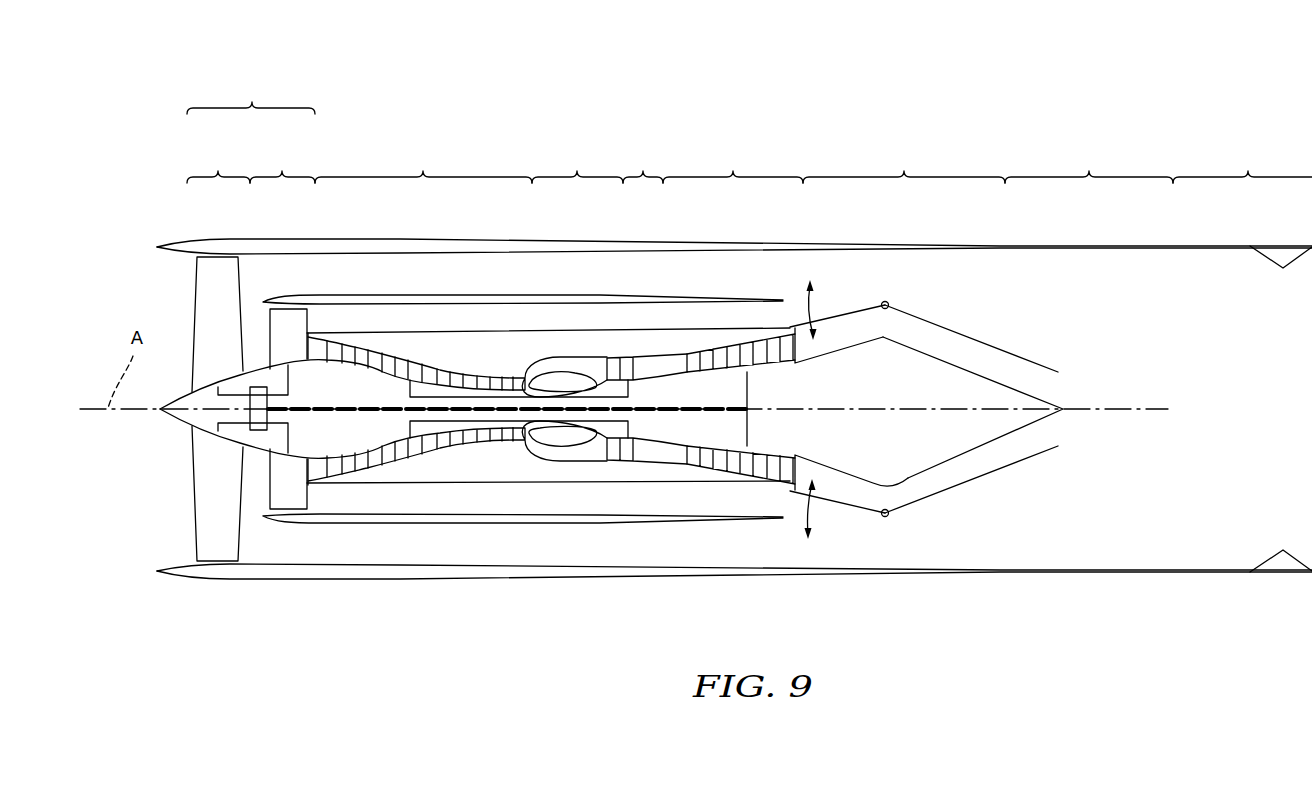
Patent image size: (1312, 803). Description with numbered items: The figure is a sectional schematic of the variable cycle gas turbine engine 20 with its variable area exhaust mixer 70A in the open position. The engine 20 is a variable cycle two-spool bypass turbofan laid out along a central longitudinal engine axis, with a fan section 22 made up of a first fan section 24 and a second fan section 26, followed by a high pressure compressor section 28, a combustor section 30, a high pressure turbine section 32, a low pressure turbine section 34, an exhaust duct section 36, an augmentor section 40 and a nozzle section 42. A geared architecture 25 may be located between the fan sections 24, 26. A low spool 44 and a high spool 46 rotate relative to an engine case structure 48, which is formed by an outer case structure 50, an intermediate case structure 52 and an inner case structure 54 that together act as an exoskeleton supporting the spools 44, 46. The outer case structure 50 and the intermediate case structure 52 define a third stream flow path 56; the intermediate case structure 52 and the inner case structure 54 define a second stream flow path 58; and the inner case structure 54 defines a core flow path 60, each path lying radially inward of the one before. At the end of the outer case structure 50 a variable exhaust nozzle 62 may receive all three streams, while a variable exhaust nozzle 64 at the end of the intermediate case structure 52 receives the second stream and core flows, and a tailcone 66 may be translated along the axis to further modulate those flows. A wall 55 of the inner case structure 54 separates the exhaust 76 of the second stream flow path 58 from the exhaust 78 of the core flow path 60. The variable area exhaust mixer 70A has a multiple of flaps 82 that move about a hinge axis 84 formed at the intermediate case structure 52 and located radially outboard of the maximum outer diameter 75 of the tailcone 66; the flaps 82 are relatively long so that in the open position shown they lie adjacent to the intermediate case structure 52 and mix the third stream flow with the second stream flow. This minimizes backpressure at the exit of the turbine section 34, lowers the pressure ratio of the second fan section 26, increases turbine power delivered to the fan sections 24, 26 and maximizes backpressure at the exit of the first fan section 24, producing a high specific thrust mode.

The gas turbine engine 20 is at (804, 110).
The fan section 22 is at (251, 91).
The first fan section 24 is at (218, 350).
The geared architecture 25 is at (260, 402).
The second fan section 26 is at (282, 324).
The high pressure compressor section 28 is at (420, 312).
The combustor section 30 is at (577, 161).
The high pressure turbine section 32 is at (647, 302).
The low pressure turbine section 34 is at (733, 312).
The exhaust duct section 36 is at (904, 161).
The augmentor section 40 is at (1089, 161).
The nozzle section 42 is at (1242, 161).
The low spool 44 is at (682, 408).
The high spool 46 is at (438, 423).
The engine case structure 48 is at (384, 591).
The outer case structure 50 is at (441, 580).
The intermediate case structure 52 is at (522, 523).
The inner case structure 54 is at (588, 482).
The wall 55 is at (802, 325).
The third stream flow path 56 is at (418, 281).
The second stream flow path 58 is at (435, 326).
The core flow path 60 is at (483, 383).
The variable exhaust nozzle 62 is at (1275, 270).
The variable exhaust nozzle 64 is at (1017, 335).
The tailcone 66 is at (951, 442).
The variable area exhaust mixer 70A is at (866, 286).
The maximum outer diameter 75 is at (883, 337).
The exhaust 76 is at (720, 317).
The exhaust 78 is at (800, 347).
The flaps 82 is at (830, 510).
The hinge axis 84 is at (883, 515).